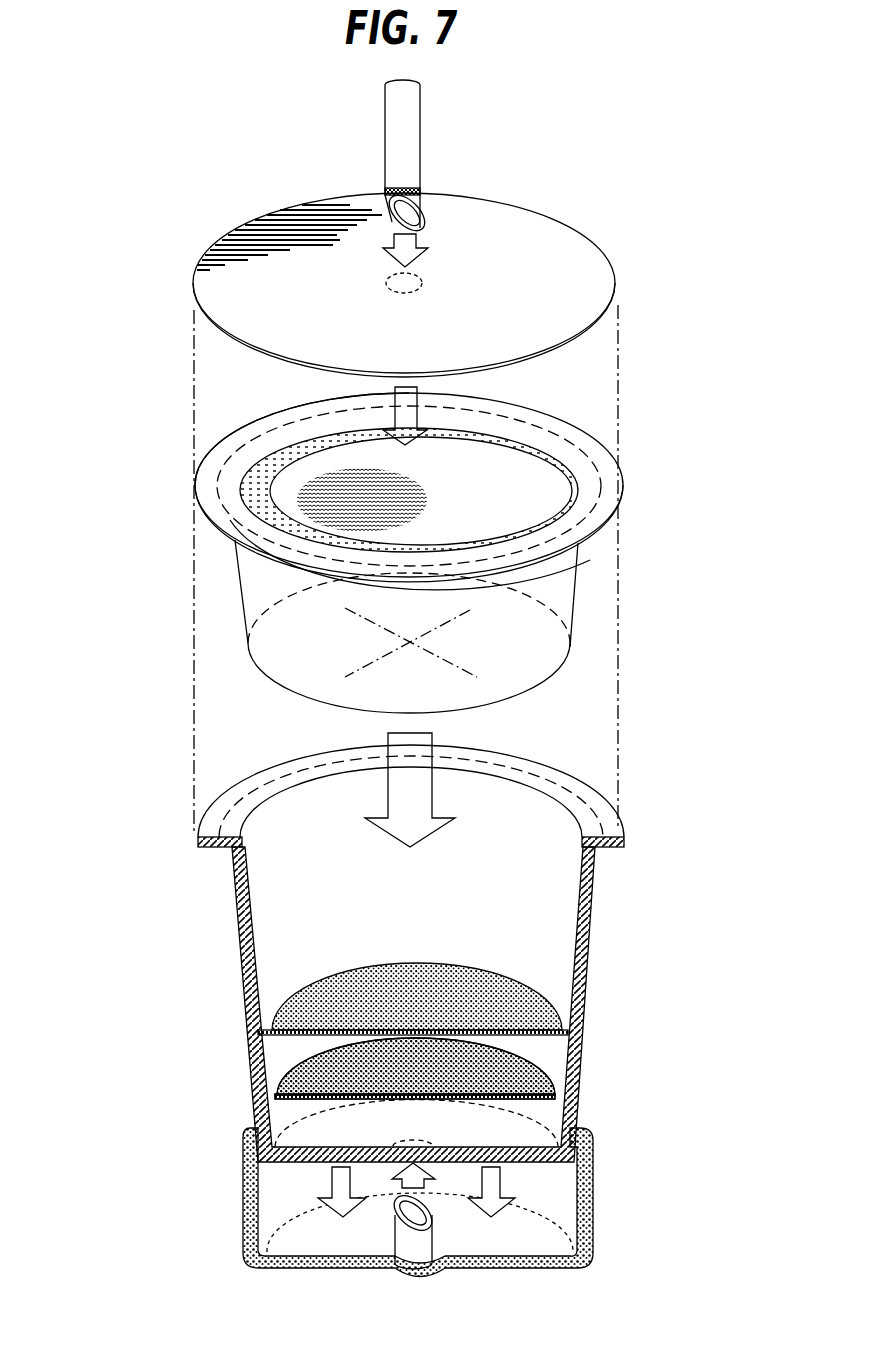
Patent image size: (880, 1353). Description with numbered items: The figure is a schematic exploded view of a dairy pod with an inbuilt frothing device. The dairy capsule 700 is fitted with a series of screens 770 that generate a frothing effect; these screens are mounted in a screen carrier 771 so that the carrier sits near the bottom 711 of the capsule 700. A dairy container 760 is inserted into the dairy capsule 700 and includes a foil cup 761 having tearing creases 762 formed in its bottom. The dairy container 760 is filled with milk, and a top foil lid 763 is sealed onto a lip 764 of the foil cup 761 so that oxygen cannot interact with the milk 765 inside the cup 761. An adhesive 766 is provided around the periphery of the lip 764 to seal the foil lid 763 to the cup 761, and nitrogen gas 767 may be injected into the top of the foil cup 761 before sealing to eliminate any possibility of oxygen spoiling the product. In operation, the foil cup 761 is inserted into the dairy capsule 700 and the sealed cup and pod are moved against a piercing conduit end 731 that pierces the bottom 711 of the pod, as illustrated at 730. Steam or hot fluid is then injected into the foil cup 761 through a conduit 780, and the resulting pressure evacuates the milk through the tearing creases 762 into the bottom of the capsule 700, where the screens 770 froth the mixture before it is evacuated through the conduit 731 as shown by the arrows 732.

The dairy capsule 700 is at (585, 937).
The bottom 711 is at (310, 1132).
The pierced bottom location 730 is at (420, 1138).
The piercing conduit end 731 is at (425, 1243).
The arrows 732 is at (502, 1182).
The dairy container 760 is at (252, 600).
The foil cup 761 is at (561, 563).
The tearing creases 762 is at (472, 608).
The top foil lid 763 is at (600, 275).
The lip 764 is at (197, 497).
The milk 765 is at (561, 487).
The adhesive 766 is at (212, 486).
The nitrogen gas 767 is at (425, 497).
The screens 770 is at (330, 1075).
The screen carrier 771 is at (270, 1068).
The conduit 780 is at (402, 117).